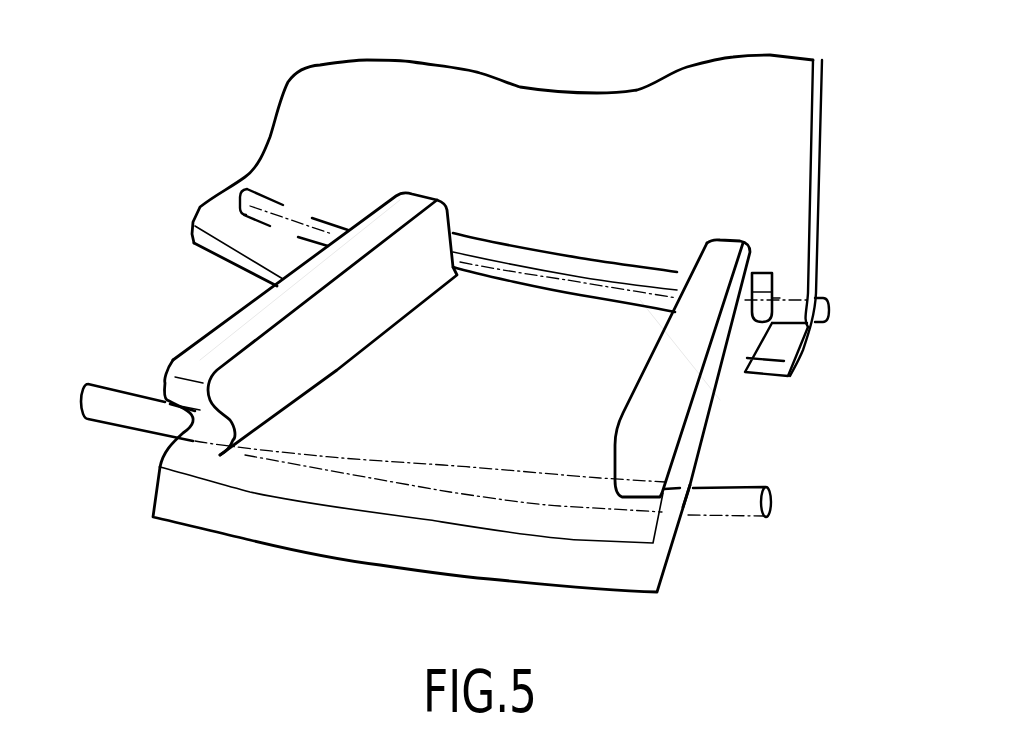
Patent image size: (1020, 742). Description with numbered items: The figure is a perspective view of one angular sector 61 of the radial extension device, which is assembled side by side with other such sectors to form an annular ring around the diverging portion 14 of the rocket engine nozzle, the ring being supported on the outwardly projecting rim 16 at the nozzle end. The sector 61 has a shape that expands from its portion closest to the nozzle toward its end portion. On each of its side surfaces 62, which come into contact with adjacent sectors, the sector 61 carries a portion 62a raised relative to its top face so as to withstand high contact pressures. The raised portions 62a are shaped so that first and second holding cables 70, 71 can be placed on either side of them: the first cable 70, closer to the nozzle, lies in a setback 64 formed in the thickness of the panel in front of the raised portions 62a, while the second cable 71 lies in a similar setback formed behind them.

The diverging portion 14 is at (593, 128).
The rim 16 is at (778, 348).
The sector 61 is at (420, 405).
The side surfaces 62 is at (167, 361).
The raised portions 62a is at (272, 305).
The setback 64 is at (774, 300).
The first holding cable 70 is at (252, 206).
The second holding cable 71 is at (743, 497).